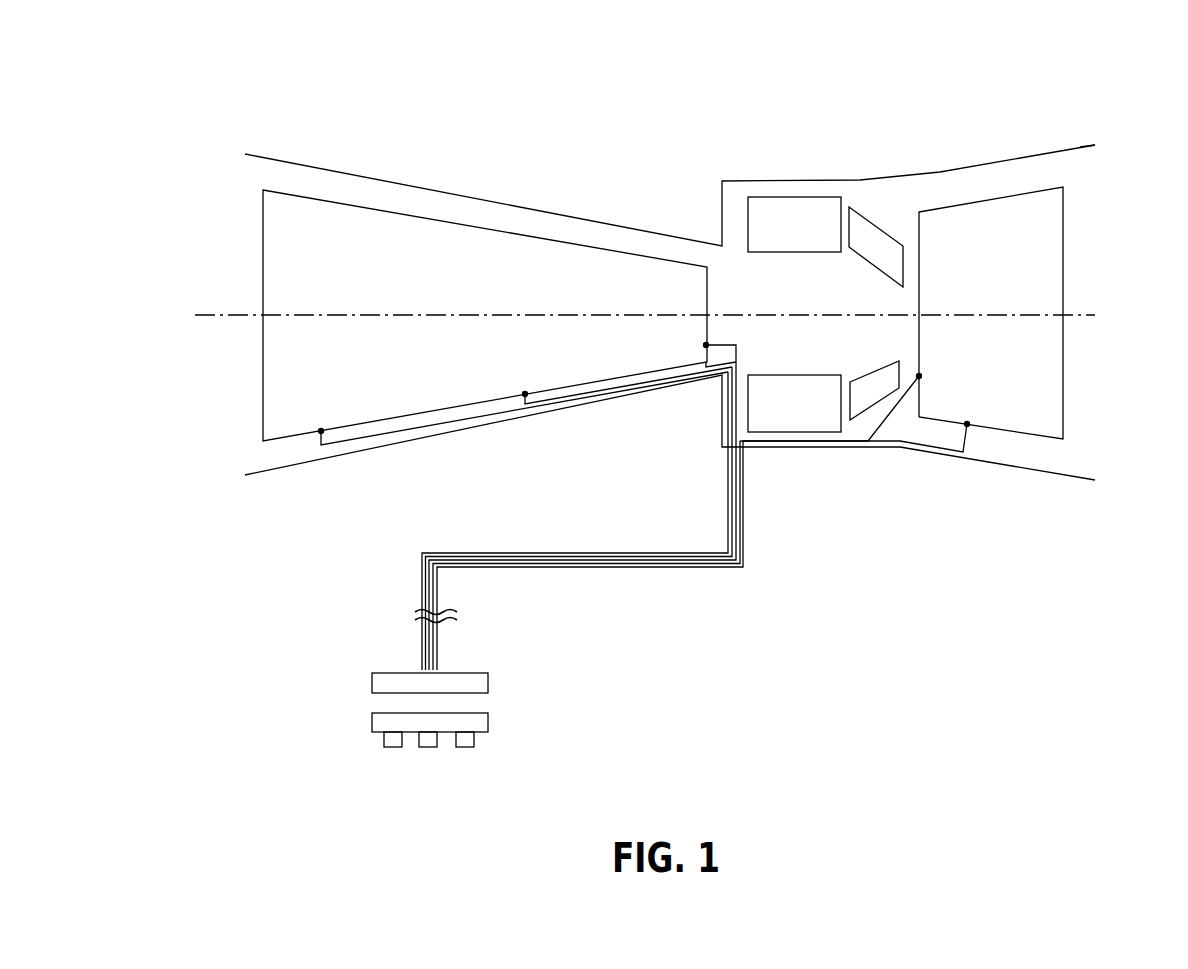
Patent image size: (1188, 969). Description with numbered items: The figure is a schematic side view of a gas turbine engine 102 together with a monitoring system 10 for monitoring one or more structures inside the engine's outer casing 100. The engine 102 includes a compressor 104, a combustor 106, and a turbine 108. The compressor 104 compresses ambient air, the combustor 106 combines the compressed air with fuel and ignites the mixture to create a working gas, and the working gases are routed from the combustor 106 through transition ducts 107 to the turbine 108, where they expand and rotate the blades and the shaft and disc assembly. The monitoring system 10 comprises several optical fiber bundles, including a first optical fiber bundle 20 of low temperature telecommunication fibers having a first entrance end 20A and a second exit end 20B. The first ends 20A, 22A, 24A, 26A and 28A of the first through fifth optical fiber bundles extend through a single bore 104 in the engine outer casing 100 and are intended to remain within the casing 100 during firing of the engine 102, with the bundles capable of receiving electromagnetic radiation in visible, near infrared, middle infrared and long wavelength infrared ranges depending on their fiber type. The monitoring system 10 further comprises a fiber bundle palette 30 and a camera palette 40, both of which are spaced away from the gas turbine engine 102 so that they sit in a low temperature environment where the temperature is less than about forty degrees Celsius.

The monitoring system 10 is at (680, 630).
The first optical fiber bundle 20 is at (747, 573).
The first entrance end 20A is at (316, 437).
The second exit end 20B is at (418, 668).
The first end of second optical fiber bundle 22A is at (520, 400).
The first end of third optical fiber bundle 24A is at (703, 352).
The first end of fourth optical fiber bundle 26A is at (927, 375).
The first end of fifth optical fiber bundle 28A is at (972, 420).
The fiber bundle palette 30 is at (492, 680).
The camera palette 40 is at (492, 722).
The outer casing 100 is at (1080, 147).
The gas turbine engine 102 is at (1020, 108).
The compressor 104 is at (468, 220).
The combustor 106 is at (793, 222).
The transition ducts 107 is at (883, 373).
The turbine 108 is at (1034, 443).